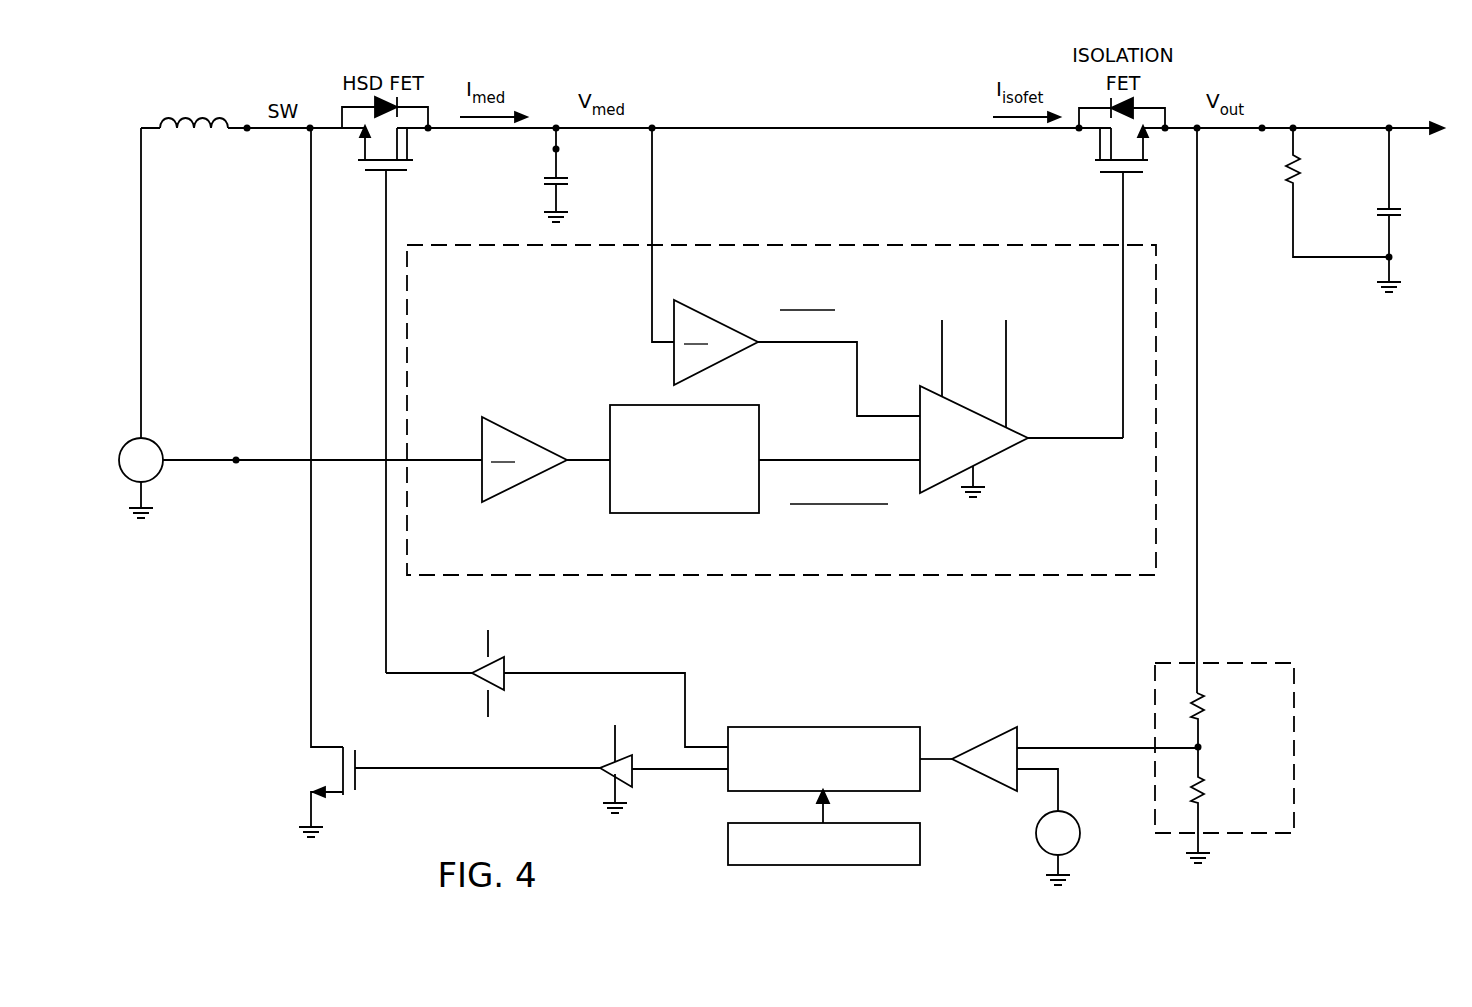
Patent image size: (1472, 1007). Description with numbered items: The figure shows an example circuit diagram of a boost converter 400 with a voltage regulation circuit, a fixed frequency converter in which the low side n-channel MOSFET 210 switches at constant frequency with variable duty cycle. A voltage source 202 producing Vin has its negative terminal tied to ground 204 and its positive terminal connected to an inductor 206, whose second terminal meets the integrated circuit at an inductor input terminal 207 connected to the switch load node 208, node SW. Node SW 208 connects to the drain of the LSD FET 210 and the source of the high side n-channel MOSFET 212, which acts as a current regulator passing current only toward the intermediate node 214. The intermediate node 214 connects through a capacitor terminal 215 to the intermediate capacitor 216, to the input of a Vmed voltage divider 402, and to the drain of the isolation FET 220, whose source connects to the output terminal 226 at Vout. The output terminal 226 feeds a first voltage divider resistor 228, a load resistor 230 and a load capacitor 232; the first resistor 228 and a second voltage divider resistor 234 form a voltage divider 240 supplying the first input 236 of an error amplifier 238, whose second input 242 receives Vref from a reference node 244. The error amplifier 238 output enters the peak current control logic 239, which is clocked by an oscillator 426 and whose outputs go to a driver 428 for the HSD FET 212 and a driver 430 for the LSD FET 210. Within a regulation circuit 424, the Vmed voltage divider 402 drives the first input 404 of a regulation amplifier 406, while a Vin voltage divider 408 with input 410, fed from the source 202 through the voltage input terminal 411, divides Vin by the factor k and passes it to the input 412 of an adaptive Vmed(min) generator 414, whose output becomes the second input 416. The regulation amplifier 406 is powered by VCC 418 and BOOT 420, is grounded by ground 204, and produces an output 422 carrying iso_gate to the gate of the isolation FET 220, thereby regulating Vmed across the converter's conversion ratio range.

The boost converter 400 is at (922, 64).
The voltage source 202 is at (122, 444).
The ground 204 is at (1380, 289).
The inductor 206 is at (183, 108).
The inductor input terminal 207 is at (242, 137).
The switch load node 208 is at (306, 133).
The low side n-channel MOSFET 210 is at (360, 785).
The high side n-channel MOSFET 212 is at (377, 173).
The intermediate node 214 is at (658, 132).
The capacitor terminal 215 is at (547, 149).
The intermediate capacitor 216 is at (545, 180).
The isolation FET 220 is at (1135, 175).
The output terminal 226 is at (1266, 122).
The first voltage divider resistor 228 is at (1205, 706).
The load resistor 230 is at (1290, 170).
The load capacitor 232 is at (1380, 213).
The second voltage divider resistor 234 is at (1205, 793).
The first input of error amplifier 236 is at (1100, 745).
The error amplifier 238 is at (985, 740).
The peak current control logic 239 is at (835, 725).
The voltage divider 240 is at (1300, 776).
The second input of error amplifier 242 is at (1062, 788).
The reference node 244 is at (1035, 833).
The Vmed voltage divider 402 is at (723, 322).
The first input of regulation amplifier 404 is at (803, 346).
The regulation amplifier 406 is at (995, 457).
The Vin voltage divider 408 is at (527, 437).
The voltage input terminal 410 is at (463, 466).
The voltage input terminal 411 is at (233, 455).
The input of adaptive Vmed(min) generator 412 is at (590, 466).
The adaptive Vmed(min) generator 414 is at (690, 516).
The second input of regulation amplifier 416 is at (812, 457).
The VCC 418 is at (940, 362).
The BOOT 420 is at (1010, 372).
The output of regulation amplifier 422 is at (1086, 443).
The regulation circuit 424 is at (898, 242).
The oscillator 426 is at (725, 845).
The driver for HSD FET 428 is at (505, 665).
The driver for LSD FET 430 is at (606, 780).